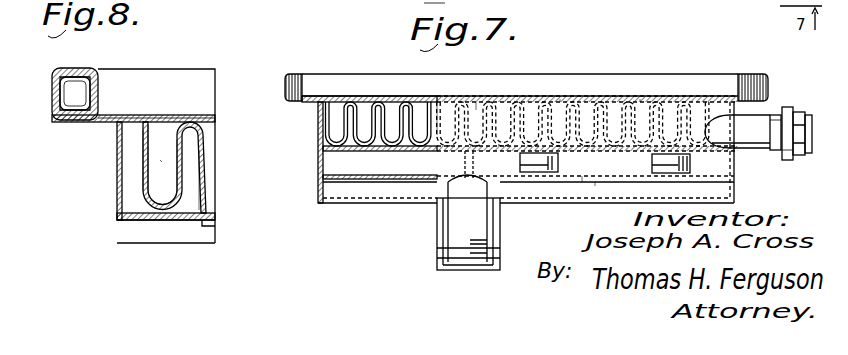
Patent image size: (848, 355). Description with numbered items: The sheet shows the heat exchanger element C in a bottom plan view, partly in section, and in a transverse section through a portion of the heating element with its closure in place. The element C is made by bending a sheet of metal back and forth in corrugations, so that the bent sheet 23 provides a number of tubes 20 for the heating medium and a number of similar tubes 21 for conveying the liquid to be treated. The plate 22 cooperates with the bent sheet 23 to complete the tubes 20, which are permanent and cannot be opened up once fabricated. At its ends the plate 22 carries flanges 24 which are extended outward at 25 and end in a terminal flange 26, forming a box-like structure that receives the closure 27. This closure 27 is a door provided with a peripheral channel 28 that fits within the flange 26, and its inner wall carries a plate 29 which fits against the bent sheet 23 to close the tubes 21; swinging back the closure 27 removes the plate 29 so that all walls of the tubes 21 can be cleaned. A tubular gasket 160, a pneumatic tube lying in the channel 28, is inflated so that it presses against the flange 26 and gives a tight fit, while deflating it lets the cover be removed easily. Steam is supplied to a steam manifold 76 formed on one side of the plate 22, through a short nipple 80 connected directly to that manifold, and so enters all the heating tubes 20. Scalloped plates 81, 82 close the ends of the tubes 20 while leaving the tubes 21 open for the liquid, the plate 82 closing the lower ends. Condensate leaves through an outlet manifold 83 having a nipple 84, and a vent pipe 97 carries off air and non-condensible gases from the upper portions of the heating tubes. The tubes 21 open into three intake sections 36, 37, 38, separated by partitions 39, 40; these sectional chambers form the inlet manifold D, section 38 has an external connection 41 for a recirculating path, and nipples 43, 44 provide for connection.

In FIG. 8, the tubes for the heating medium 20 is at (205, 130).
In FIG. 7, the tubes for the heating medium 20 is at (357, 155).
In FIG. 8, the tubes for conveying the liquid to be treated 21 is at (160, 162).
In FIG. 7, the tubes for conveying the liquid to be treated 21 is at (397, 112).
In FIG. 8, the plate 22 is at (208, 237).
In FIG. 7, the plate 22 is at (432, 166).
In FIG. 8, the bent sheet 23 is at (135, 208).
In FIG. 7, the bent sheet 23 is at (325, 127).
In FIG. 8, the flanges 24 is at (117, 155).
In FIG. 7, the flanges 24 is at (323, 149).
In FIG. 8, the outward extension 25 is at (86, 122).
In FIG. 7, the outward extension 25 is at (312, 101).
In FIG. 8, the terminal flange 26 is at (55, 88).
In FIG. 7, the terminal flange 26 is at (287, 100).
In FIG. 8, the closure 27 is at (193, 83).
In FIG. 7, the closure 27 is at (520, 85).
In FIG. 8, the peripheral channel 28 is at (100, 83).
In FIG. 8, the plate 29 is at (185, 118).
In FIG. 8, the tubular gasket 160 is at (98, 98).
In FIG. 8, the scalloped plate 82 is at (135, 192).
In FIG. 8, the heat exchanger element C is at (146, 158).
In FIG. 7, the heat exchanger element C is at (703, 110).
In FIG. 7, the scalloped plate 81 is at (411, 112).
In FIG. 7, the intake section 36 is at (455, 106).
In FIG. 7, the partition 39 is at (478, 101).
In FIG. 7, the intake section 37 is at (563, 98).
In FIG. 7, the partition 40 is at (643, 99).
In FIG. 7, the intake section 38 is at (683, 98).
In FIG. 7, the external connection 41 is at (762, 151).
In FIG. 7, the inlet manifold D is at (422, 167).
In FIG. 7, the vent pipe 97 is at (476, 166).
In FIG. 7, the nipple 43 is at (552, 170).
In FIG. 7, the nipple 44 is at (688, 161).
In FIG. 7, the short nipple 80 is at (500, 252).
In FIG. 7, the nipple 84 is at (481, 220).
In FIG. 7, the outlet manifold 83 is at (586, 183).
In FIG. 7, the steam manifold 76 is at (596, 188).